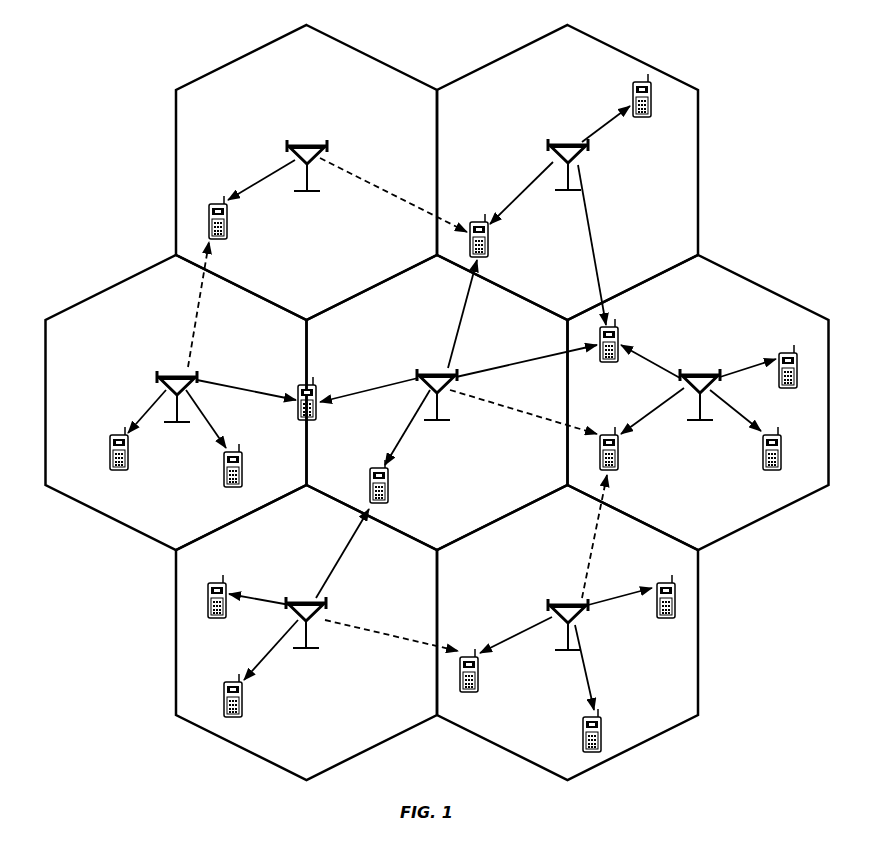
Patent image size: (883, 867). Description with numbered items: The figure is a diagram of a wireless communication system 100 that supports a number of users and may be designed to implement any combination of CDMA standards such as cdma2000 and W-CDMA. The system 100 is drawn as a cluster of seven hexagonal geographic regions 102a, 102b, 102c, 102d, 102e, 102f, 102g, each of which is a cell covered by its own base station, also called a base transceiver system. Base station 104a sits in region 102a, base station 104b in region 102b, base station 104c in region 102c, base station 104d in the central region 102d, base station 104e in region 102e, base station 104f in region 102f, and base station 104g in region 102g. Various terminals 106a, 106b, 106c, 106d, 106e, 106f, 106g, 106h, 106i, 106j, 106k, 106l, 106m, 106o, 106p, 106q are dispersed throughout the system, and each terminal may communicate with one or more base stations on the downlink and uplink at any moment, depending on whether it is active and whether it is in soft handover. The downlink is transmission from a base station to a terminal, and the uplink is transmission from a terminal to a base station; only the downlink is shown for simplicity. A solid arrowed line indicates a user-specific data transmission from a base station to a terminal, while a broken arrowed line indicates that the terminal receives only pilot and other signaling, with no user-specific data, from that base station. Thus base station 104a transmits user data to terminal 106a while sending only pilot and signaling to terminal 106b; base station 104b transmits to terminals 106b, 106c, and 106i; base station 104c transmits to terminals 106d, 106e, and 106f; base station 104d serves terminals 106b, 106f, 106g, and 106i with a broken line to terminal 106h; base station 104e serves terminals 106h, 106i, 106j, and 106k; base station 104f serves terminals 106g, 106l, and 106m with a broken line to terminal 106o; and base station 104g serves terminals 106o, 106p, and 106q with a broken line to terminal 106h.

The wireless communication system 100 is at (776, 57).
The geographic region 102a is at (243, 56).
The geographic region 102b is at (644, 43).
The geographic region 102c is at (117, 286).
The geographic region 102d is at (460, 293).
The geographic region 102e is at (767, 287).
The geographic region 102f is at (175, 638).
The geographic region 102g is at (700, 640).
The base station 104a is at (303, 144).
The base station 104b is at (563, 143).
The base station 104c is at (174, 375).
The base station 104d is at (433, 373).
The base station 104e is at (700, 373).
The base station 104f is at (305, 601).
The base station 104g is at (565, 603).
The terminal 106a is at (215, 203).
The terminal 106b is at (476, 220).
The terminal 106c is at (633, 88).
The terminal 106d is at (110, 449).
The terminal 106e is at (230, 451).
The terminal 106f is at (298, 391).
The terminal 106g is at (374, 467).
The terminal 106h is at (605, 434).
The terminal 106i is at (619, 335).
The terminal 106j is at (786, 353).
The terminal 106k is at (769, 434).
The terminal 106l is at (211, 583).
The terminal 106m is at (228, 681).
The terminal 106o is at (478, 675).
The terminal 106p is at (583, 730).
The terminal 106q is at (667, 582).